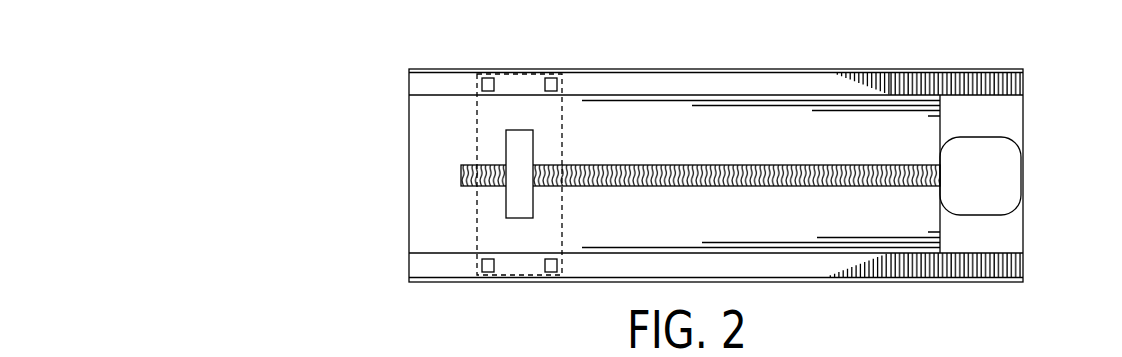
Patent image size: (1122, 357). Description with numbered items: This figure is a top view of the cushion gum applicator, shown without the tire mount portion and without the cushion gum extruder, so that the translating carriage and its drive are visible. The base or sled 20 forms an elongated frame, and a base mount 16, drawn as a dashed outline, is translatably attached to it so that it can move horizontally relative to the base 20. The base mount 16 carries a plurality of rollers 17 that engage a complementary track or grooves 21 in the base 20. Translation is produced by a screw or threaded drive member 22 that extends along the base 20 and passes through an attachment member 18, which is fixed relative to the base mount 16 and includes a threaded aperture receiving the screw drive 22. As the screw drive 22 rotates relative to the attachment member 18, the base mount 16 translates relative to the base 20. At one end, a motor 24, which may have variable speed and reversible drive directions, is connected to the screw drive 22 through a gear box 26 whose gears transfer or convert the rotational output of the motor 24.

The base mount 16 is at (473, 228).
The rollers 17 is at (550, 77).
The attachment member 18 is at (522, 155).
The base 20 is at (863, 282).
The track or grooves 21 is at (647, 82).
The screw drive 22 is at (762, 187).
The motor 24 is at (1014, 193).
The gear box 26 is at (1014, 118).